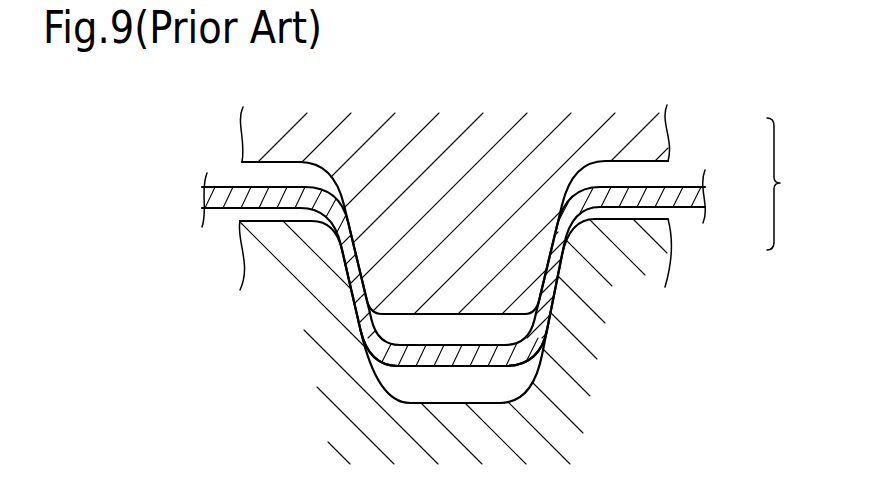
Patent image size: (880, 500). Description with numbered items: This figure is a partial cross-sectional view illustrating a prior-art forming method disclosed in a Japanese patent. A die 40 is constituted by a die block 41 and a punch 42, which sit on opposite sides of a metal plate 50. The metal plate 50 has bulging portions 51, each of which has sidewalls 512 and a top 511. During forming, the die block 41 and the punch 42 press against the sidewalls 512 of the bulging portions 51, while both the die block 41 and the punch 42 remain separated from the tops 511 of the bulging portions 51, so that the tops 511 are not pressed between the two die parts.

The die 40 is at (790, 184).
The die block 41 is at (668, 237).
The punch 42 is at (661, 130).
The metal plate 50 is at (233, 187).
The bulging portions 51 is at (373, 346).
The tops 511 is at (287, 187).
The sidewalls 512 is at (343, 268).